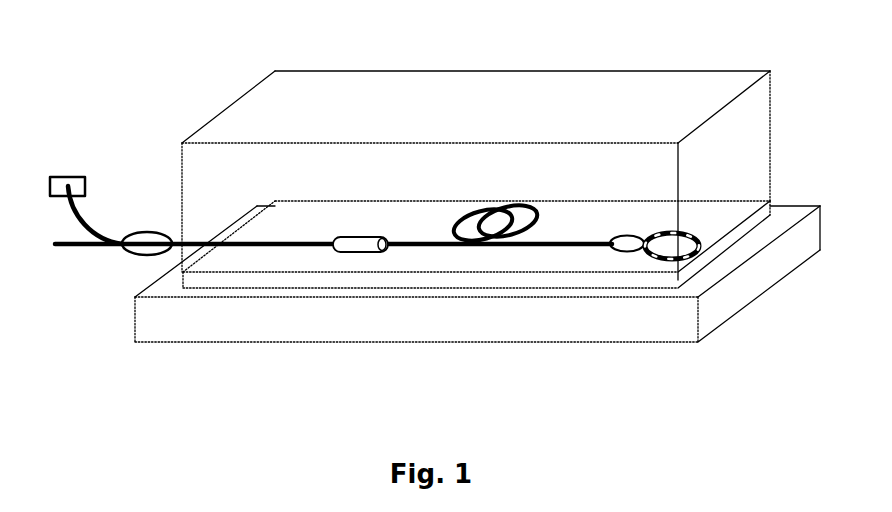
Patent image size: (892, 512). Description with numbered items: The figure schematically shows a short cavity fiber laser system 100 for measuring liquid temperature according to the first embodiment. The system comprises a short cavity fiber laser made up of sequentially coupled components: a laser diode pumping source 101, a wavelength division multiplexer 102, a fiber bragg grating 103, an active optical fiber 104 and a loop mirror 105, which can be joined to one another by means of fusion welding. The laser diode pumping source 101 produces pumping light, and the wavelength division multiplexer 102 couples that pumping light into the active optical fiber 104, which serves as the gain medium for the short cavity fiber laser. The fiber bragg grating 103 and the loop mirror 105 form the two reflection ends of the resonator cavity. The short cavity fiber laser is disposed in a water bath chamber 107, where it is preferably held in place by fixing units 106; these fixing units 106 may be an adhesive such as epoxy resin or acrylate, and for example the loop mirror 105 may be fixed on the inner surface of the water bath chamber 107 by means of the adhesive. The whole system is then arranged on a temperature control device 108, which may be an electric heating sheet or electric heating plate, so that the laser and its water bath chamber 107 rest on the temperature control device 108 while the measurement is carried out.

The short cavity fiber laser system 100 is at (632, 46).
The laser diode pumping source 101 is at (81, 175).
The wavelength division multiplexer 102 is at (131, 255).
The fiber bragg grating 103 is at (363, 237).
The active optical fiber 104 is at (500, 208).
The loop mirror 105 is at (630, 236).
The fixing units 106 is at (687, 233).
The water bath chamber 107 is at (268, 117).
The temperature control device 108 is at (480, 325).